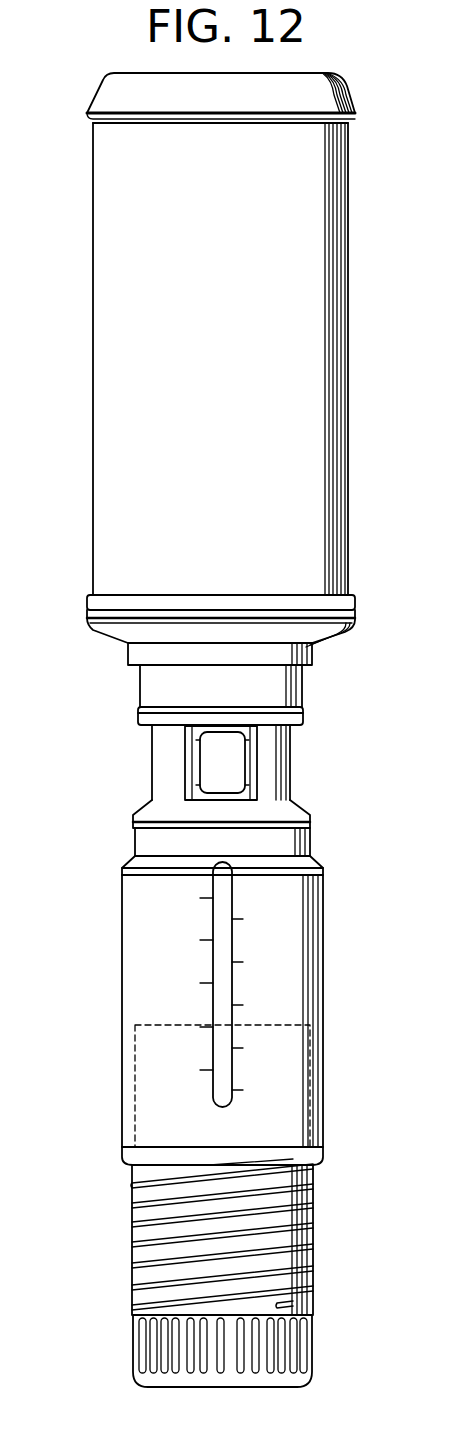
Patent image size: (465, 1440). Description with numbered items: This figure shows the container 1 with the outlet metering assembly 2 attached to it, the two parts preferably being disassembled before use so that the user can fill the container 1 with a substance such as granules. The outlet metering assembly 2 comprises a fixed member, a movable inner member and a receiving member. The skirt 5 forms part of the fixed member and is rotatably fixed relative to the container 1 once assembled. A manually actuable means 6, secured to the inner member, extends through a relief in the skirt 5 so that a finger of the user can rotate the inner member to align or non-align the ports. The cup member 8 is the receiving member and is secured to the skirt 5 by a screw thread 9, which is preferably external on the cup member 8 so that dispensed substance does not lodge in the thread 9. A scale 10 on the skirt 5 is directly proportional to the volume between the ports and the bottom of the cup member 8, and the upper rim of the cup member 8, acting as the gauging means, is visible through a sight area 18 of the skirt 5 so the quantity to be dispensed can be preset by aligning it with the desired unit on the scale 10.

The container 1 is at (307, 336).
The outlet metering assembly 2 is at (96, 1008).
The skirt 5 is at (297, 903).
The manually actuable means 6 is at (206, 765).
The cup member 8 is at (312, 1285).
The screw thread 9 is at (312, 1213).
The scale 10 is at (243, 981).
The sight area 18 is at (218, 918).